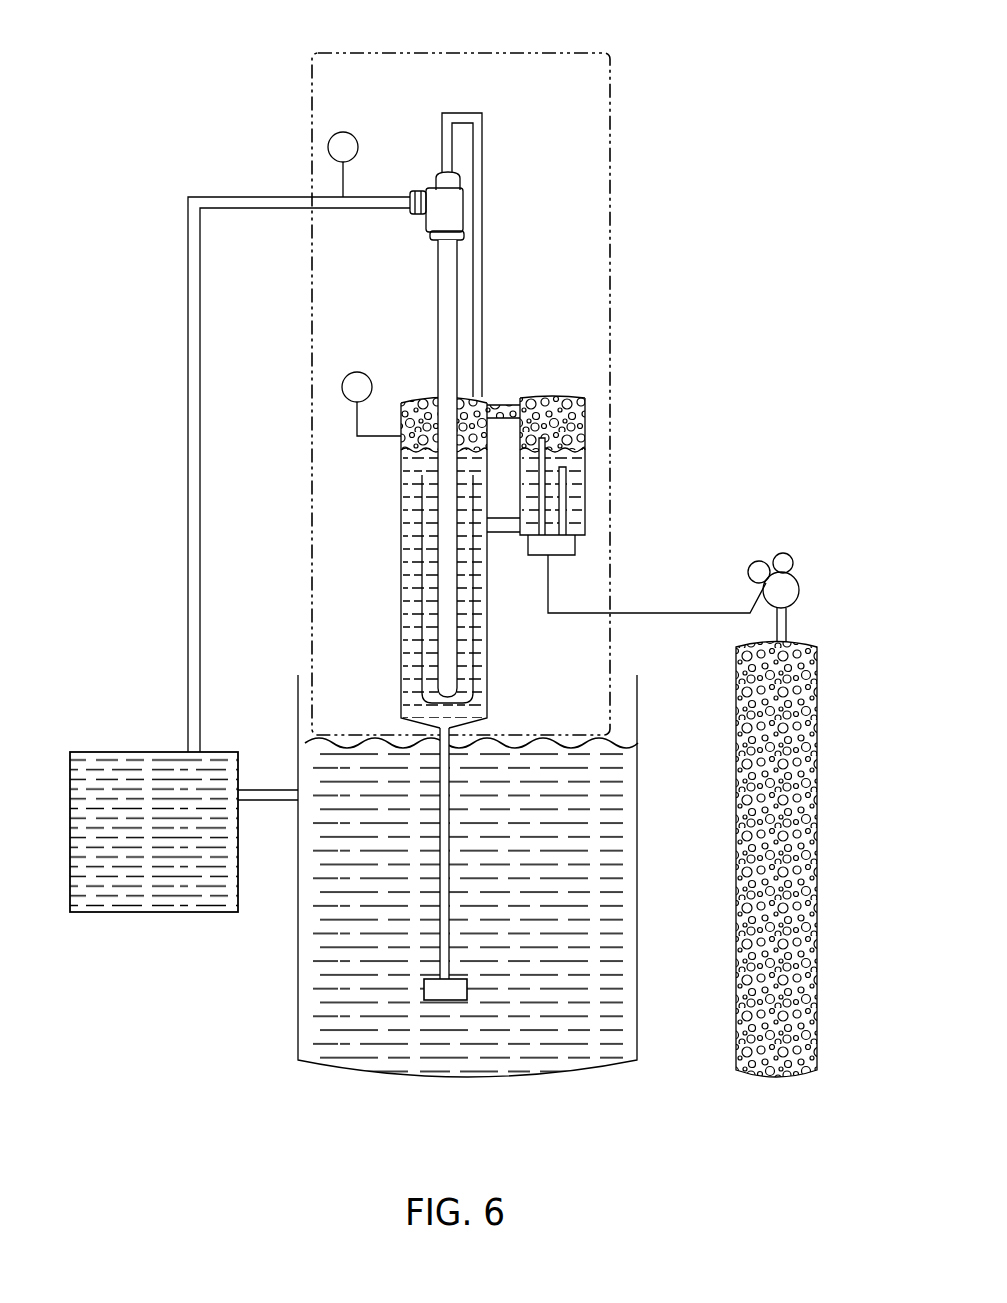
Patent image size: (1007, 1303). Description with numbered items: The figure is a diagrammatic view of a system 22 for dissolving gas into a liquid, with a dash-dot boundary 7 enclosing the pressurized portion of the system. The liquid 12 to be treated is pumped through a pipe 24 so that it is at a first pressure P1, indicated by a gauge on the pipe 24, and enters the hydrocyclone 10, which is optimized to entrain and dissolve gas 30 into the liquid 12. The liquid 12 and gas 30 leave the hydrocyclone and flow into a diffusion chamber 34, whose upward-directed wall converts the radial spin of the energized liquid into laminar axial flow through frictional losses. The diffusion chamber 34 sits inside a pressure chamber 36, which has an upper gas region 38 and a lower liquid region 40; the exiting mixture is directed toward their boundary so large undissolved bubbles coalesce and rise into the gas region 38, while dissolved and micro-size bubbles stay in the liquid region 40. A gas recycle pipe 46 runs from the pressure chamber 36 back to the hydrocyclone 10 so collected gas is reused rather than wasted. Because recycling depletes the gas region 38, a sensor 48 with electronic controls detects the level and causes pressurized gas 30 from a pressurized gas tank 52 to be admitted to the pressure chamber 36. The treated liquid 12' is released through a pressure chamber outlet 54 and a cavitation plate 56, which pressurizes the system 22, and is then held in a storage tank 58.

The enclosure boundary 7 is at (465, 394).
The hydrocyclone 10 is at (549, 420).
The liquid 12 is at (168, 802).
The dissolved gas liquid 12' is at (411, 909).
The system 22 is at (305, 91).
The pipe 24 is at (188, 330).
The gas 30 is at (803, 818).
The diffusion chamber 34 is at (470, 622).
The pressure chamber 36 is at (402, 530).
The upper gas region 38 is at (428, 410).
The lower liquid region 40 is at (413, 608).
The gas recycle pipe 46 is at (482, 312).
The sensor 48 is at (578, 545).
The pressurized gas tank 52 is at (825, 684).
The pressure chamber outlet 54 is at (447, 925).
The cavitation plate 56 is at (433, 990).
The storage tank 58 is at (297, 958).
The first pressure P1 is at (328, 148).